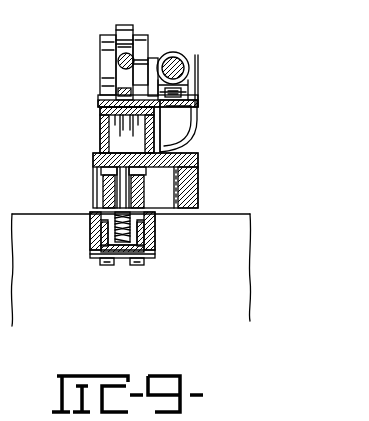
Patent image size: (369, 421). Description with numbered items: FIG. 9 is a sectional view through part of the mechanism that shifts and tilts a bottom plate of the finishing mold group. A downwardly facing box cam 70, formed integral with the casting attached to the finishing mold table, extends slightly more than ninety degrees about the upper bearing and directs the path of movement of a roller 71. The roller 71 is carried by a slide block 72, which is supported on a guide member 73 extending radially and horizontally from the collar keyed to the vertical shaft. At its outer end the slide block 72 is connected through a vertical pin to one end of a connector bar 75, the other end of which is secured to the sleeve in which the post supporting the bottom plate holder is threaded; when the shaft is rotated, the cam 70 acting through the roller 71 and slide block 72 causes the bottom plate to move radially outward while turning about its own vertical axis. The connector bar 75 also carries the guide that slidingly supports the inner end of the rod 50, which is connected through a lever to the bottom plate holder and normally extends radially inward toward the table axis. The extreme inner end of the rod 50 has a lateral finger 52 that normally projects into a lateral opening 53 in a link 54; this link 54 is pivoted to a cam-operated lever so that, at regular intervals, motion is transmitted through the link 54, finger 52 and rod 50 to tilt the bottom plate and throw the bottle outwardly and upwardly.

The rod 50 is at (186, 64).
The lateral finger 52 is at (145, 68).
The lateral opening 53 is at (103, 47).
The link 54 is at (118, 61).
The box cam 70 is at (199, 170).
The roller 71 is at (104, 181).
The slide block 72 is at (90, 229).
The guide member 73 is at (124, 260).
The connector bar 75 is at (184, 126).